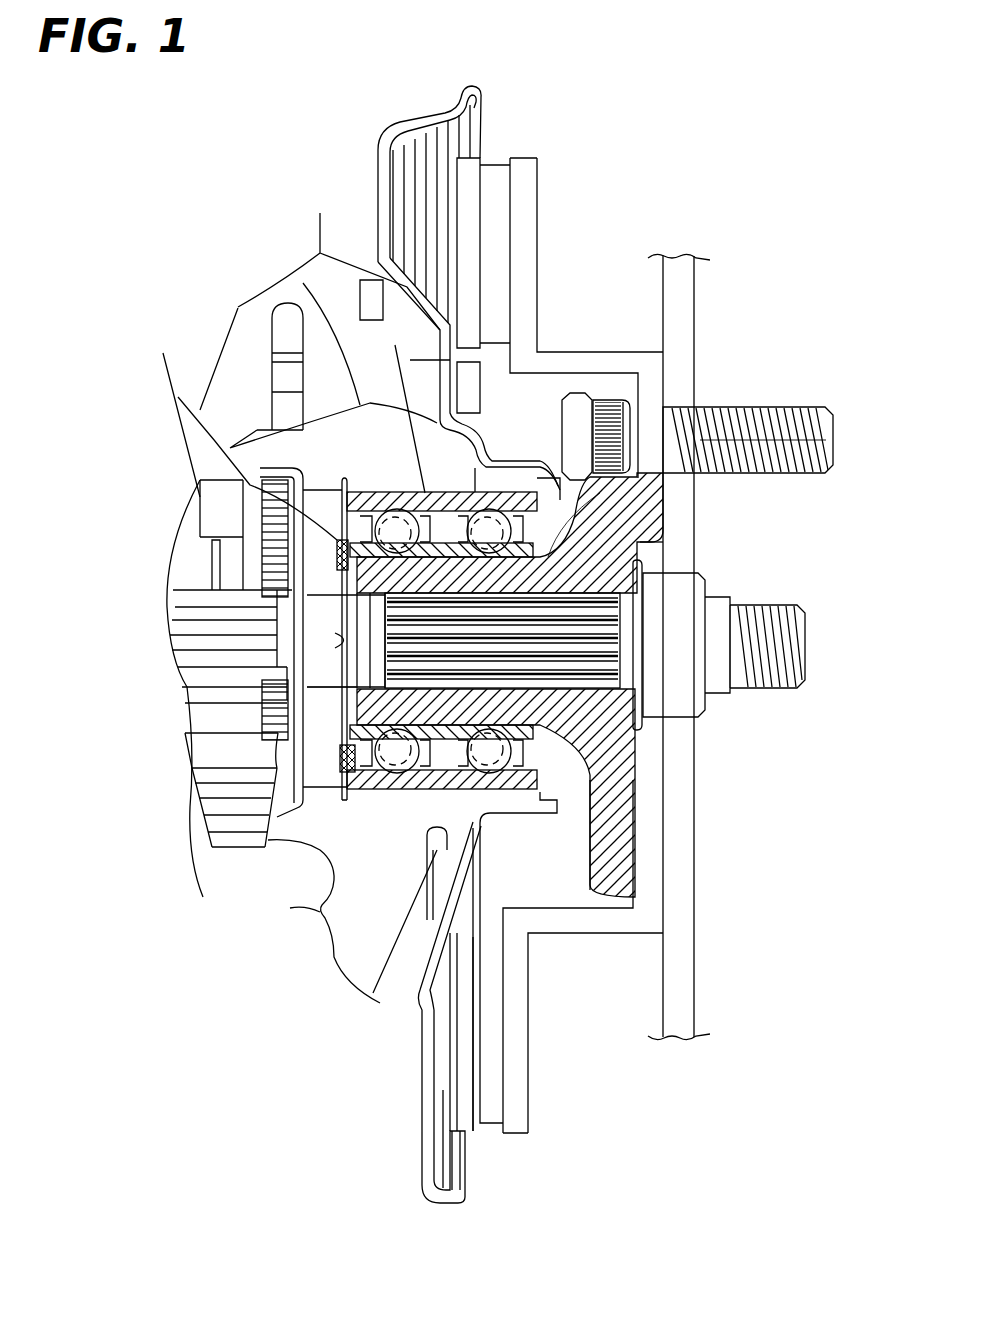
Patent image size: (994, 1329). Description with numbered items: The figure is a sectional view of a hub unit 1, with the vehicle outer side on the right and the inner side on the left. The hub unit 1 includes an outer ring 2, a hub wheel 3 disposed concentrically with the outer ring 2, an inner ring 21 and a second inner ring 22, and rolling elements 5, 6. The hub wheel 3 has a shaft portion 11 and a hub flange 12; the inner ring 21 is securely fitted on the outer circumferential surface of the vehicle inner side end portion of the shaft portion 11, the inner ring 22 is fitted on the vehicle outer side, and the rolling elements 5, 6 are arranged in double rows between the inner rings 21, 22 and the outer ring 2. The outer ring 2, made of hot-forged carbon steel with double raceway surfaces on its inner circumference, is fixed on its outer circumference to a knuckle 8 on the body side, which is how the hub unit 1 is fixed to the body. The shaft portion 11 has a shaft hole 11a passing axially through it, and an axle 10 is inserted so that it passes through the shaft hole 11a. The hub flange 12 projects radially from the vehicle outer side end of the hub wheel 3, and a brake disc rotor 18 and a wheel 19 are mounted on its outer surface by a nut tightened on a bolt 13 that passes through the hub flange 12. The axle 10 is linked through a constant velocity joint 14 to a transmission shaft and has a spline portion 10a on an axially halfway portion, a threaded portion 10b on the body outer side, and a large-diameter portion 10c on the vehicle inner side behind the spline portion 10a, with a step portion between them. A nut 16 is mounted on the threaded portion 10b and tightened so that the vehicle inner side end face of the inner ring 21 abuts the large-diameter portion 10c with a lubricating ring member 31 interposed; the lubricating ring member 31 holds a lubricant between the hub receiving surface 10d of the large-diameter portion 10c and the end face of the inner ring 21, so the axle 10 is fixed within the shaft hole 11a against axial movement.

The hub unit 1 is at (672, 145).
The outer ring 2 is at (392, 515).
The hub wheel 3 is at (640, 800).
The rolling element 5 is at (493, 515).
The rolling element 6 is at (370, 312).
The knuckle 8 is at (233, 363).
The axle 10 is at (822, 688).
The spline portion 10a is at (580, 665).
The threaded portion 10b is at (763, 617).
The large-diameter portion 10c is at (333, 700).
The hub receiving surface 10d is at (345, 640).
The shaft portion 11 is at (623, 570).
The shaft hole 11a is at (673, 543).
The hub flange 12 is at (617, 397).
The bolt 13 is at (743, 407).
The constant velocity joint 14 is at (152, 620).
The nut 16 is at (680, 687).
The brake disc rotor 18 is at (613, 920).
The wheel 19 is at (694, 304).
The inner ring 21 is at (337, 553).
The inner ring 22 is at (610, 553).
The lubricating ring member 31 is at (290, 678).